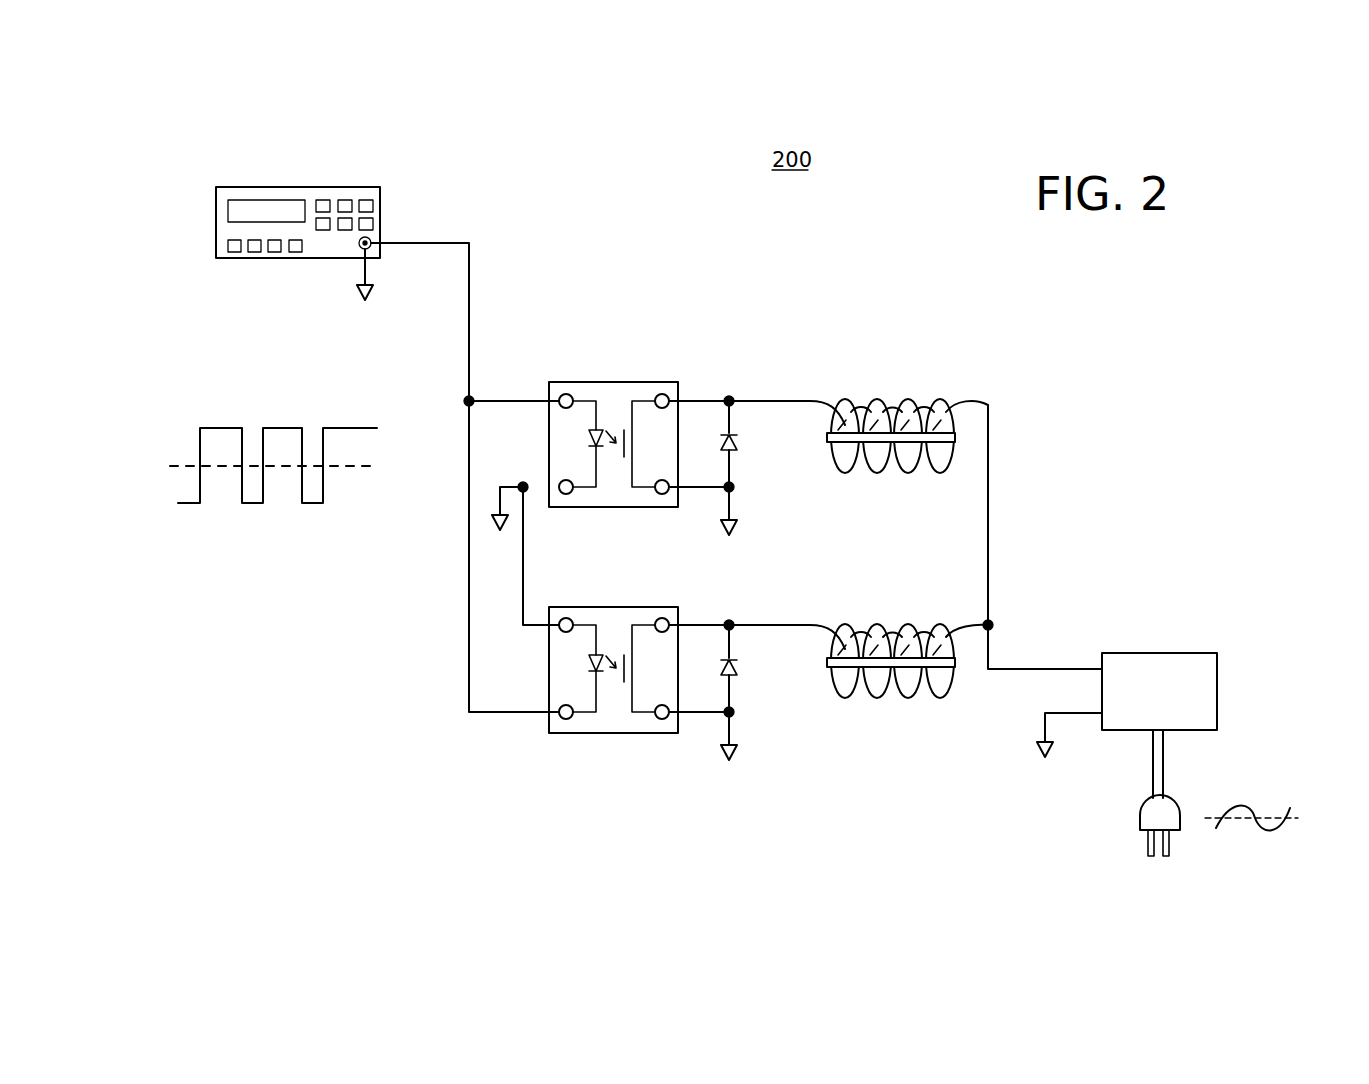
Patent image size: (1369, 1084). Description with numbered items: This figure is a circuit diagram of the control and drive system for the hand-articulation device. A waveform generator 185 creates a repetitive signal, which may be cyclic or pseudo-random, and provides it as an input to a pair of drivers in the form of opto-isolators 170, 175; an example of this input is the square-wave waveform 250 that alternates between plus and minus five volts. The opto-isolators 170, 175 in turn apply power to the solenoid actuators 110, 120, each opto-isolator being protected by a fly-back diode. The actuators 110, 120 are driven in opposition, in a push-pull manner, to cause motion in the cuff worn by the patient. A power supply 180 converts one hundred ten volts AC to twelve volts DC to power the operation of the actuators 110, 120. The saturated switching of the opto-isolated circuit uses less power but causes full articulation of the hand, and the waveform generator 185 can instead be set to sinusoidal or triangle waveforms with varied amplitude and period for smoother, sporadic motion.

The solenoid actuator 110 is at (893, 392).
The solenoid actuator 120 is at (896, 710).
The opto-isolator 170 is at (632, 382).
The opto-isolator 175 is at (625, 733).
The power supply 180 is at (1123, 655).
The waveform generator 185 is at (310, 191).
The waveform 250 is at (265, 522).